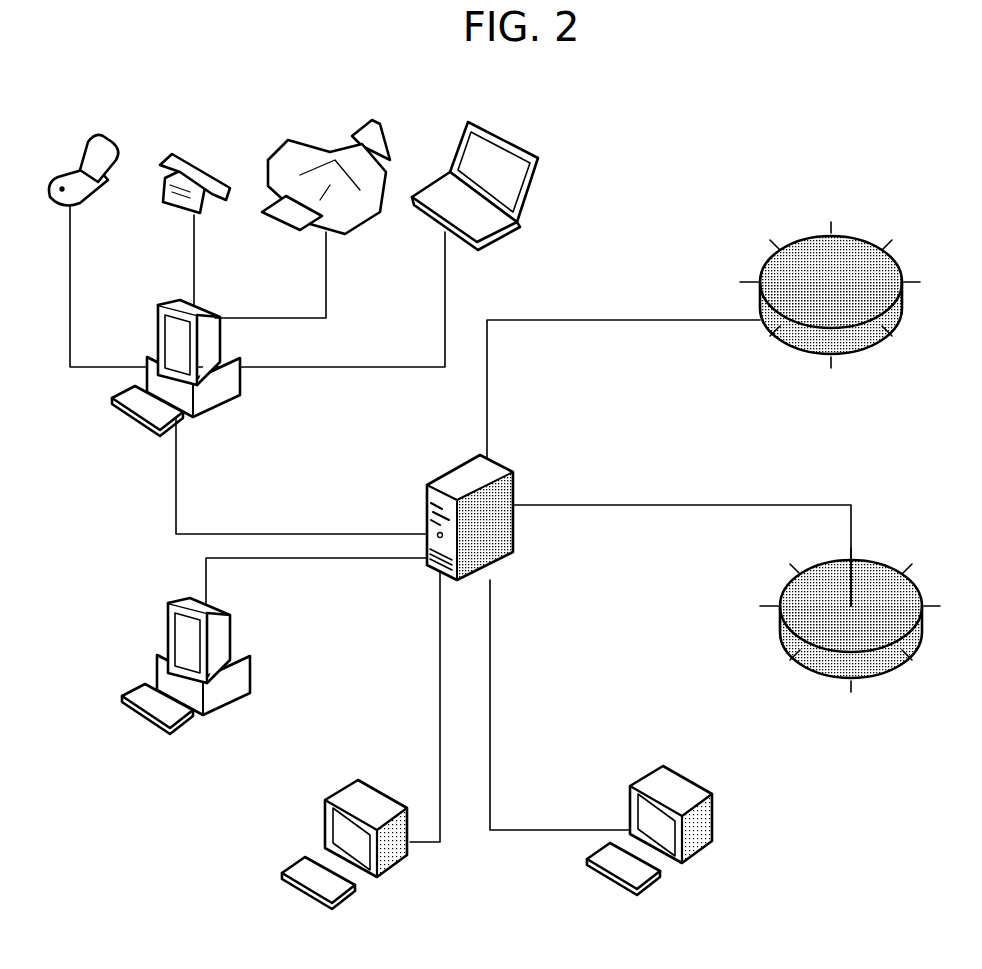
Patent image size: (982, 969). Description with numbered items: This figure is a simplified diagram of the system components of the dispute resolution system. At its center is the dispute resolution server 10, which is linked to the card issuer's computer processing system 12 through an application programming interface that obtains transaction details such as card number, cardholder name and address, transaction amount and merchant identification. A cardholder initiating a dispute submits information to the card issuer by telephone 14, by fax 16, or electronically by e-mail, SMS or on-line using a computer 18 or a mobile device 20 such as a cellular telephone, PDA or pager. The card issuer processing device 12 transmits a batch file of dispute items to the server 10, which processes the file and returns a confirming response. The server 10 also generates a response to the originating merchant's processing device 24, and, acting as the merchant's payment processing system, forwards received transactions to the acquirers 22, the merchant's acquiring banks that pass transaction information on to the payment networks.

The dispute resolution server 10 is at (504, 516).
The card issuer processing device 12 is at (201, 505).
The telephone 14 is at (195, 164).
The fax 16 is at (326, 164).
The computer 18 is at (505, 186).
The mobile device 20 is at (85, 150).
The acquirer 22 is at (855, 457).
The merchant processing device 24 is at (516, 826).